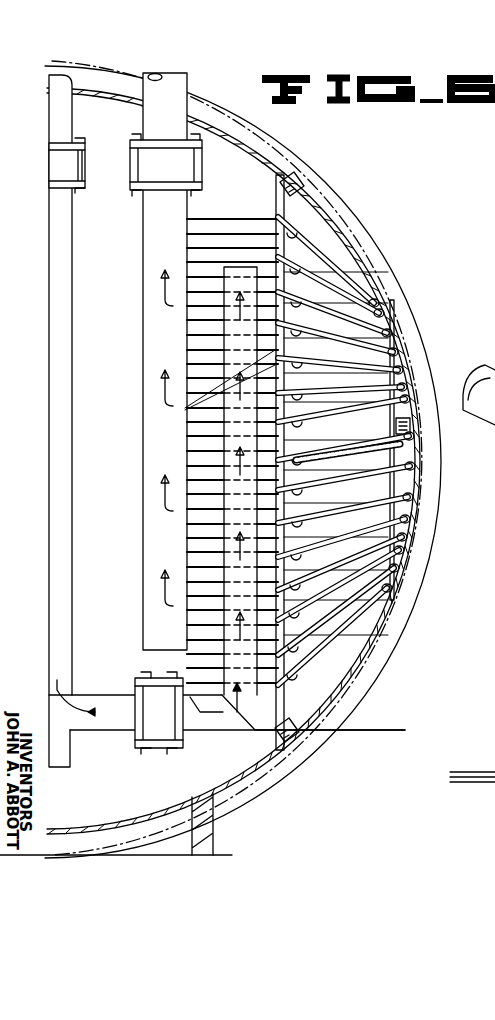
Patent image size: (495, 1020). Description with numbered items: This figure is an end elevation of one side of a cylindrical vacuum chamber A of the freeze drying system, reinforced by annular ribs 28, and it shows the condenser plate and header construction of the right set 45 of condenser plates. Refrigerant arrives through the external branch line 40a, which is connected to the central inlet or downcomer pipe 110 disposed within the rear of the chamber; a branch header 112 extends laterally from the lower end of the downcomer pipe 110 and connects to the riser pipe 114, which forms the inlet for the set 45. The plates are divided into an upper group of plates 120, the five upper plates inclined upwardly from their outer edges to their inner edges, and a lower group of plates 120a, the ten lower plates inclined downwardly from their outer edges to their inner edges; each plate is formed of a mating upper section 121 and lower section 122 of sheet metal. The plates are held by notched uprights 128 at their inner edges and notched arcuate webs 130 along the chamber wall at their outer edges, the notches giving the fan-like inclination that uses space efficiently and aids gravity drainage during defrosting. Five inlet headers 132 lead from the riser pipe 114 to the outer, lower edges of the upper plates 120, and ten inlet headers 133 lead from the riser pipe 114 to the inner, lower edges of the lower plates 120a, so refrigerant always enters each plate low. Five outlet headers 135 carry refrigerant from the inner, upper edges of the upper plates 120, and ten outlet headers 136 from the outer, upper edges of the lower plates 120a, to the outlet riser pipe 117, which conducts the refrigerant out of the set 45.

The annular ribs 28 is at (293, 131).
The vacuum chamber A is at (318, 184).
The external branch line 40a is at (57, 93).
The right set of condenser plates 45 is at (395, 300).
The central inlet or downcomer pipe 110 is at (55, 252).
The branch header 112 is at (102, 745).
The riser pipe 114 is at (240, 272).
The outlet riser pipe 117 is at (152, 492).
The upper group of plates 120 is at (313, 233).
The lower group of plates 120a is at (407, 397).
The upper section 121 is at (465, 771).
The lower section 122 is at (465, 783).
The notched uprights 128 is at (273, 198).
The notched arcuate webs 130 is at (333, 237).
The inlet headers 132 is at (383, 303).
The inlet headers 133 is at (383, 408).
The outlet headers 135 is at (190, 222).
The outlet headers 136 is at (190, 442).